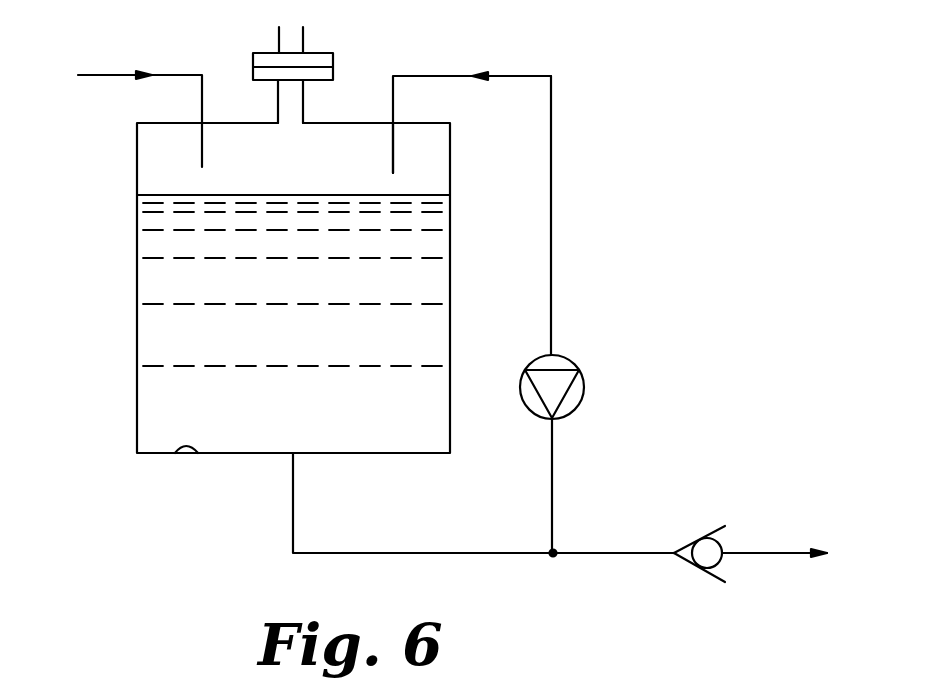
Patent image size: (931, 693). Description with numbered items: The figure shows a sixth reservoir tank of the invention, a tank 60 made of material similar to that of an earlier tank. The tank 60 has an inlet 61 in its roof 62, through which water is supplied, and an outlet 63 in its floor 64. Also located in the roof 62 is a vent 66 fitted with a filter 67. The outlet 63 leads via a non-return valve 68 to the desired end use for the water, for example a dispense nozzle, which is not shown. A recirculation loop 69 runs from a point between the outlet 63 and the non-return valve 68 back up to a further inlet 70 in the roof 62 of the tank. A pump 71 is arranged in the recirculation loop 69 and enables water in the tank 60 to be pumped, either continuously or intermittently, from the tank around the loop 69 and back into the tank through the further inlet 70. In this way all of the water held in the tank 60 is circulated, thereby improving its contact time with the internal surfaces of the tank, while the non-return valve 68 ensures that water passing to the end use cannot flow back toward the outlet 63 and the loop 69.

The tank 60 is at (128, 334).
The inlet 61 is at (202, 123).
The roof 62 is at (360, 123).
The outlet 63 is at (292, 455).
The floor 64 is at (178, 452).
The vent 66 is at (305, 105).
The filter 67 is at (318, 52).
The non-return valve 68 is at (703, 567).
The recirculation loop 69 is at (553, 310).
The further inlet 70 is at (393, 123).
The pump 71 is at (584, 394).